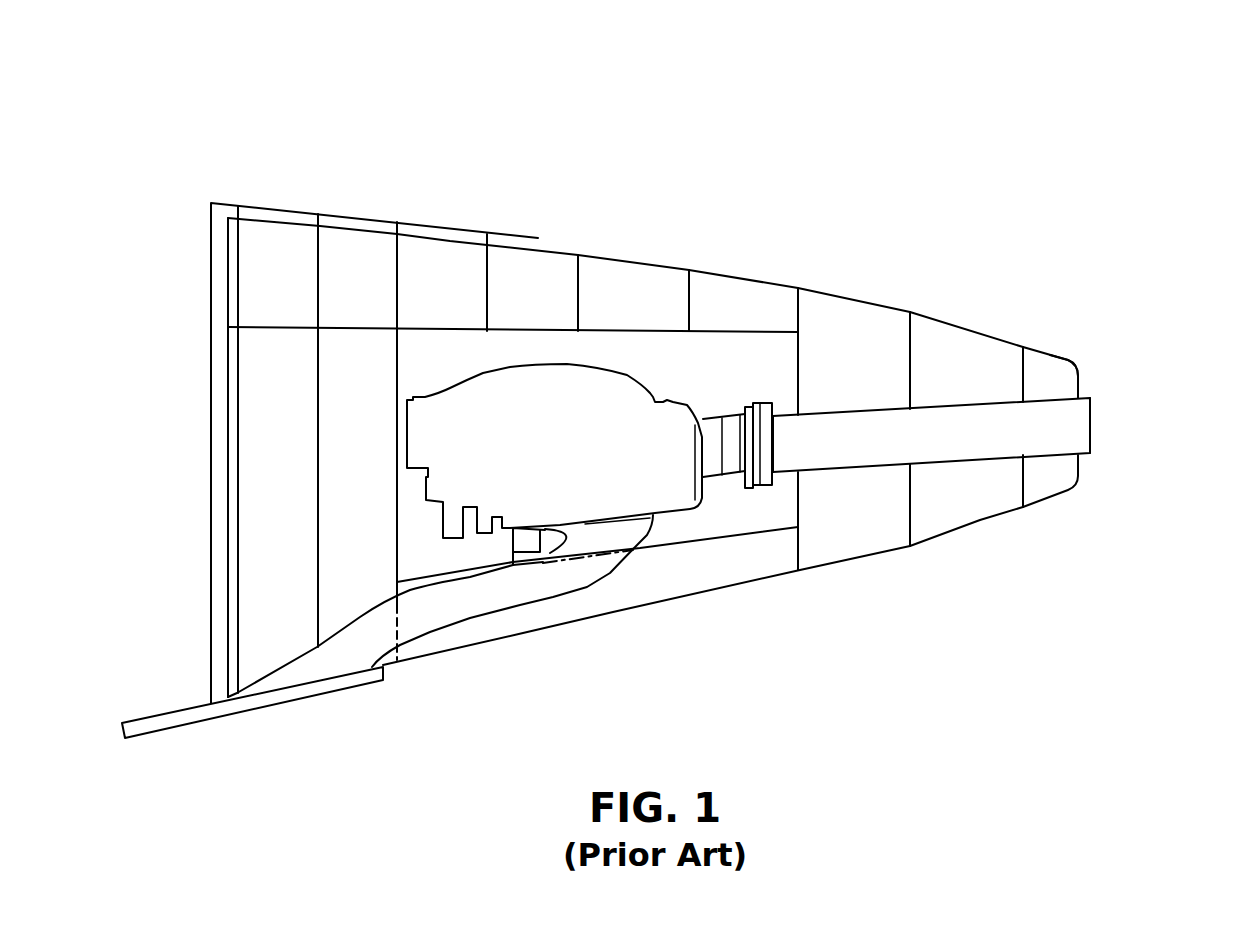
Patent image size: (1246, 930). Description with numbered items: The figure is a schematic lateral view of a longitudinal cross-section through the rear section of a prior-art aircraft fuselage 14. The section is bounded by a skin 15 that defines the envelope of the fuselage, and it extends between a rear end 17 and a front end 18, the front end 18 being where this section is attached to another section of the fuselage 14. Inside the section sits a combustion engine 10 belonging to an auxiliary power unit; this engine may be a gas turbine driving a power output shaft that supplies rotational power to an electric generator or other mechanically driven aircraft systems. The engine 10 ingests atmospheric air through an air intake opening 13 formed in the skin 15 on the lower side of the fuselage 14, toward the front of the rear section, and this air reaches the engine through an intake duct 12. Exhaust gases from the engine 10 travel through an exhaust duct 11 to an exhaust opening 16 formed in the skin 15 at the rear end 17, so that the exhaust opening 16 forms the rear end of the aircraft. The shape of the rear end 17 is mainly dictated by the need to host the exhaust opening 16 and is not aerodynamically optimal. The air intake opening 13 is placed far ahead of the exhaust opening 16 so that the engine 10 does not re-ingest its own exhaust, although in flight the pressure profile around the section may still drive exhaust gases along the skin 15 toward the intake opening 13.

The combustion engine 10 is at (600, 450).
The exhaust duct 11 is at (853, 440).
The intake duct 12 is at (490, 592).
The air intake opening 13 is at (285, 698).
The fuselage 14 is at (436, 268).
The skin 15 is at (610, 252).
The exhaust opening 16 is at (1104, 418).
The rear end 17 is at (1078, 342).
The front end 18 is at (208, 194).